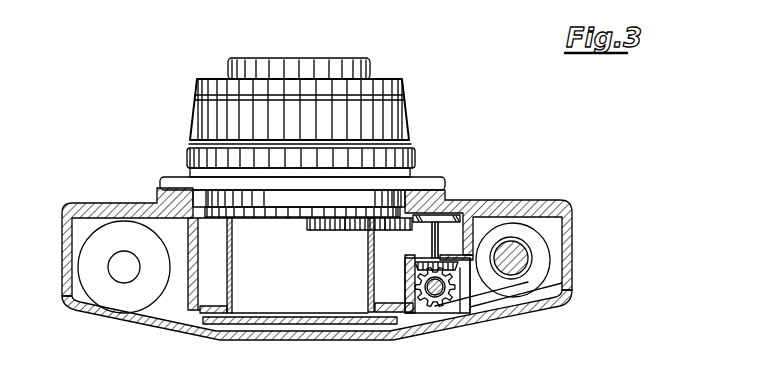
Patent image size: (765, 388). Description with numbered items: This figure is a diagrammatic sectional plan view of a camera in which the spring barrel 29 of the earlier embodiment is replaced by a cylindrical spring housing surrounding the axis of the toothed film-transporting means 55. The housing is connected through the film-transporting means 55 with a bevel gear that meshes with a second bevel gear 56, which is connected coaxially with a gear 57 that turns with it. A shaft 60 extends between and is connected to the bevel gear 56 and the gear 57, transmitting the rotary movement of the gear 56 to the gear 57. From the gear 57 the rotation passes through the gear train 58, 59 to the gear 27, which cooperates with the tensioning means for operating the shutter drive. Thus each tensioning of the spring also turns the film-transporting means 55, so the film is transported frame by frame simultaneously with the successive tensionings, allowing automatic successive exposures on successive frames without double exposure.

The gear 27 is at (311, 231).
The gear train 59 is at (356, 231).
The gear train 58 is at (396, 230).
The gear 57 is at (452, 217).
The shaft 60 is at (427, 232).
The toothed film-transporting means 55 is at (426, 310).
The spring barrel 29 is at (447, 306).
The second bevel gear 56 is at (462, 268).